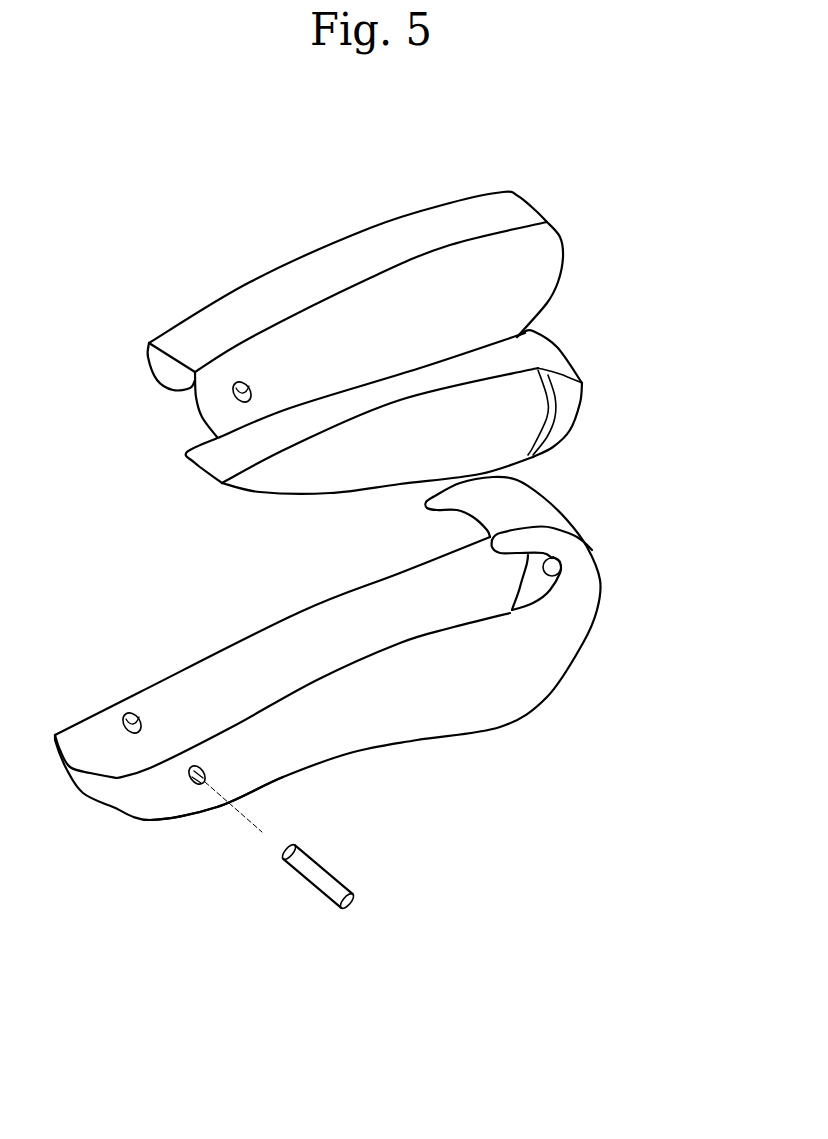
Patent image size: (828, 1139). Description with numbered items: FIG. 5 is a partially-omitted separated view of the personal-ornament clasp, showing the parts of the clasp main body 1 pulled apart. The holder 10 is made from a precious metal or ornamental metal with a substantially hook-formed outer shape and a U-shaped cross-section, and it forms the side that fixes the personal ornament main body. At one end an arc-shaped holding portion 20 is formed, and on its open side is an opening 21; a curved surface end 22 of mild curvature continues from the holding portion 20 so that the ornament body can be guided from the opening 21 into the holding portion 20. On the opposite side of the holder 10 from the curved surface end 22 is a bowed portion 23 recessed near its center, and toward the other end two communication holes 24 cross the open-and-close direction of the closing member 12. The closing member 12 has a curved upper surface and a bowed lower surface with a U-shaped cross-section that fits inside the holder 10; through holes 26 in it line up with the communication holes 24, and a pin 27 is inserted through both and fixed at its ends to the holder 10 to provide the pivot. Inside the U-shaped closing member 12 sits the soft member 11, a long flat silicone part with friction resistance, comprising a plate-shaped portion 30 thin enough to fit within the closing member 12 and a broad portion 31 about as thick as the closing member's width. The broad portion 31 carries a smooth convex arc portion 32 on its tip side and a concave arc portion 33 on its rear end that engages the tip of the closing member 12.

The clasp main body 1 is at (432, 765).
The holder 10 is at (515, 673).
The soft member 11 is at (225, 455).
The closing member 12 is at (370, 253).
The holding portion 20 is at (562, 575).
The opening 21 is at (470, 515).
The curved surface end 22 is at (232, 640).
The bowed portion 23 is at (352, 755).
The communication holes 24 is at (137, 717).
The through holes 26 is at (248, 389).
The pin 27 is at (322, 880).
The plate-shaped portion 30 is at (458, 408).
The broad portion 31 is at (562, 407).
The convex arc portion 32 is at (583, 382).
The concave arc portion 33 is at (547, 404).